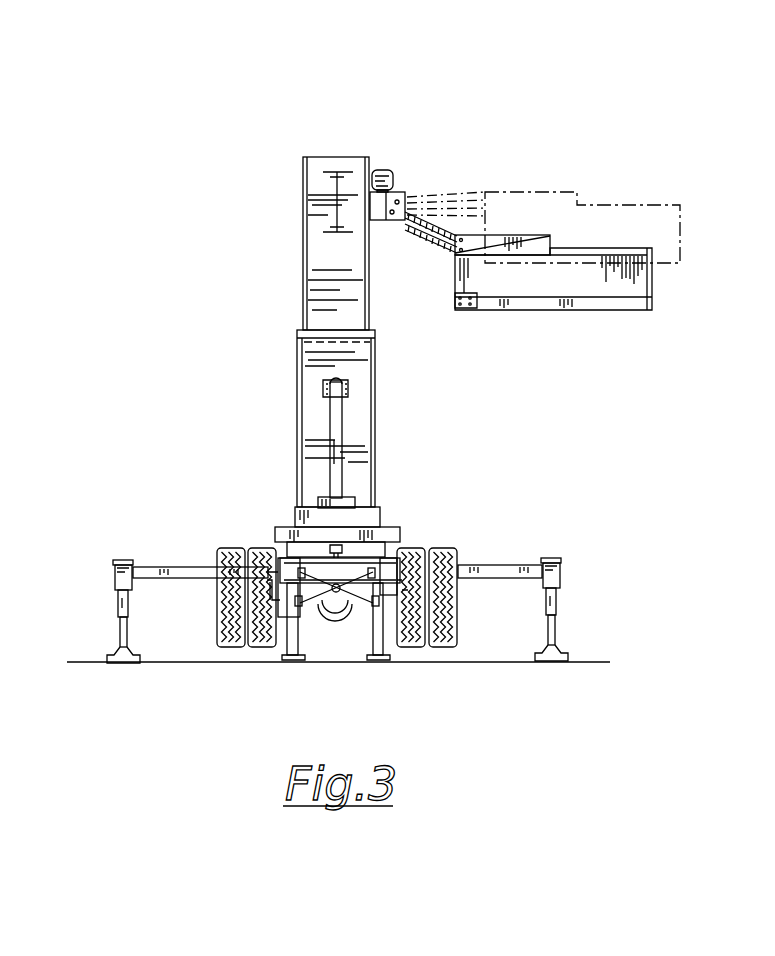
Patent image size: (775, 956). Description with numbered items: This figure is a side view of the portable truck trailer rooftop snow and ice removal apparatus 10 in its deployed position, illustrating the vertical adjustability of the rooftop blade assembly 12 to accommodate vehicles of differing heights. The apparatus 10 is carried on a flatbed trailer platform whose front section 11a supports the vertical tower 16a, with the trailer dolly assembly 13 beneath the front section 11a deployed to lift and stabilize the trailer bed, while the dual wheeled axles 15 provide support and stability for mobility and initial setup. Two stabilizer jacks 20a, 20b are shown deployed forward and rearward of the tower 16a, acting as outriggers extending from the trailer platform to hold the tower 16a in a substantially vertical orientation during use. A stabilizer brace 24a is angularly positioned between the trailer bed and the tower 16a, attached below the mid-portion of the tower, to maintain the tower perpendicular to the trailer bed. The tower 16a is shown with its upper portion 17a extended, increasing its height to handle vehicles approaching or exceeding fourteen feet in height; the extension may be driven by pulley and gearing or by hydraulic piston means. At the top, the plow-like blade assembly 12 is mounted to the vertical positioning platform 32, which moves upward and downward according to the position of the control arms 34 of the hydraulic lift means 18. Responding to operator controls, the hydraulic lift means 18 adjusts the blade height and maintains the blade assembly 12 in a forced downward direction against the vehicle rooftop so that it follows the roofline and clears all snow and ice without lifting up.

The portable truck trailer rooftop snow and ice removal apparatus 10 is at (220, 112).
The front section of trailer platform 11a is at (385, 533).
The blade assembly 12 is at (638, 290).
The trailer dolly assembly 13 is at (377, 632).
The dual wheeled axles 15 is at (250, 648).
The tower 16a is at (311, 390).
The upper portion of tower 17a is at (303, 232).
The hydraulic lift means 18 is at (410, 182).
The stabilizer jack 20a is at (113, 582).
The stabilizer jack 20b is at (562, 572).
The stabilizer brace 24a is at (343, 450).
The vertical positioning platform 32 is at (498, 243).
The control arms 34 is at (410, 227).